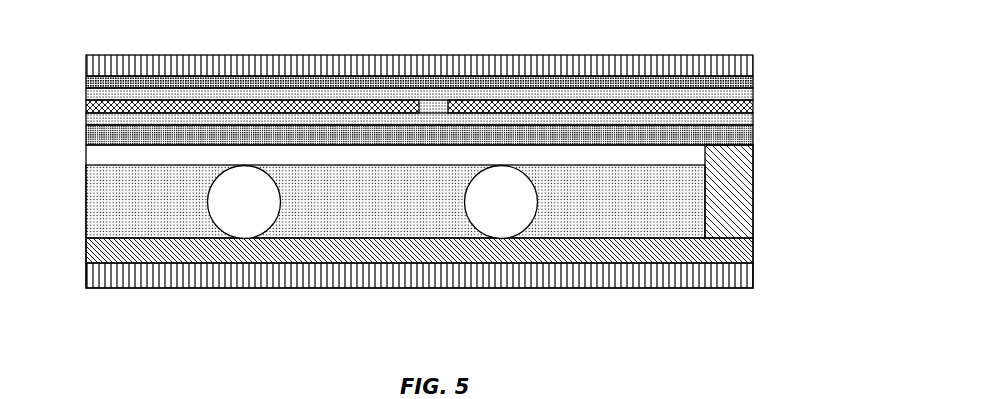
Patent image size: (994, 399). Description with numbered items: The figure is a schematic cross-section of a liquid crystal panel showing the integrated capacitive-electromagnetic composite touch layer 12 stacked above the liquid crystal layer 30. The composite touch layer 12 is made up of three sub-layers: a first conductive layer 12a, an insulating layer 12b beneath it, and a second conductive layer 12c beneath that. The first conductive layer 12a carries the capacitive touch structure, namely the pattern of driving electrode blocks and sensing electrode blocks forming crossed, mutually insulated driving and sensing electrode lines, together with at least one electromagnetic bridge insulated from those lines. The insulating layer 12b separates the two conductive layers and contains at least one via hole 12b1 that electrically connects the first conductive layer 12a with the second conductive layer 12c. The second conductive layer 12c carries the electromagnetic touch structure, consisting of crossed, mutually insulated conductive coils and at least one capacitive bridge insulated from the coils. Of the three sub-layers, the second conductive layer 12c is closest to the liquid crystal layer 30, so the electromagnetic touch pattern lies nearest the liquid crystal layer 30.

The integrated capacitive-electromagnetic composite touch layer 12 is at (442, 75).
The first conductive layer 12a is at (238, 97).
The insulating layer 12b is at (753, 106).
The via hole 12b1 is at (432, 112).
The second conductive layer 12c is at (577, 120).
The liquid crystal layer 30 is at (115, 208).